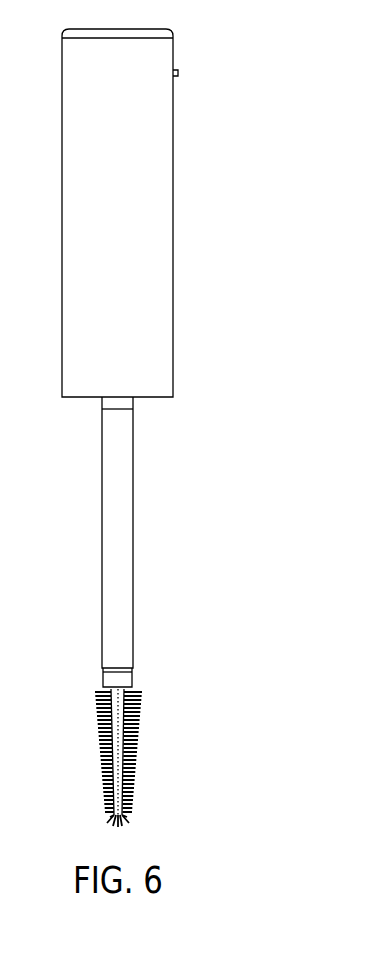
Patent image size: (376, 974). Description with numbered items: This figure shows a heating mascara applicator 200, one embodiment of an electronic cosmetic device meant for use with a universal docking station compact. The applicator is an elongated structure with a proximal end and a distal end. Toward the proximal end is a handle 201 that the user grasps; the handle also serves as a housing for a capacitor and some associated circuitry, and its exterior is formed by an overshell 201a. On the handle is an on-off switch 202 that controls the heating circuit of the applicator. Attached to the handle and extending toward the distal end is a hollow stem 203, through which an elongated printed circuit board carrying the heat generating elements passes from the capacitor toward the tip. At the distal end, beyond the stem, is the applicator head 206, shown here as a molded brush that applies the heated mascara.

The heating mascara applicator 200 is at (205, 428).
The handle 201 is at (172, 213).
The overshell 201a is at (158, 260).
The on-off switch 202 is at (178, 73).
The hollow stem 203 is at (133, 550).
The applicator head 206 is at (140, 742).